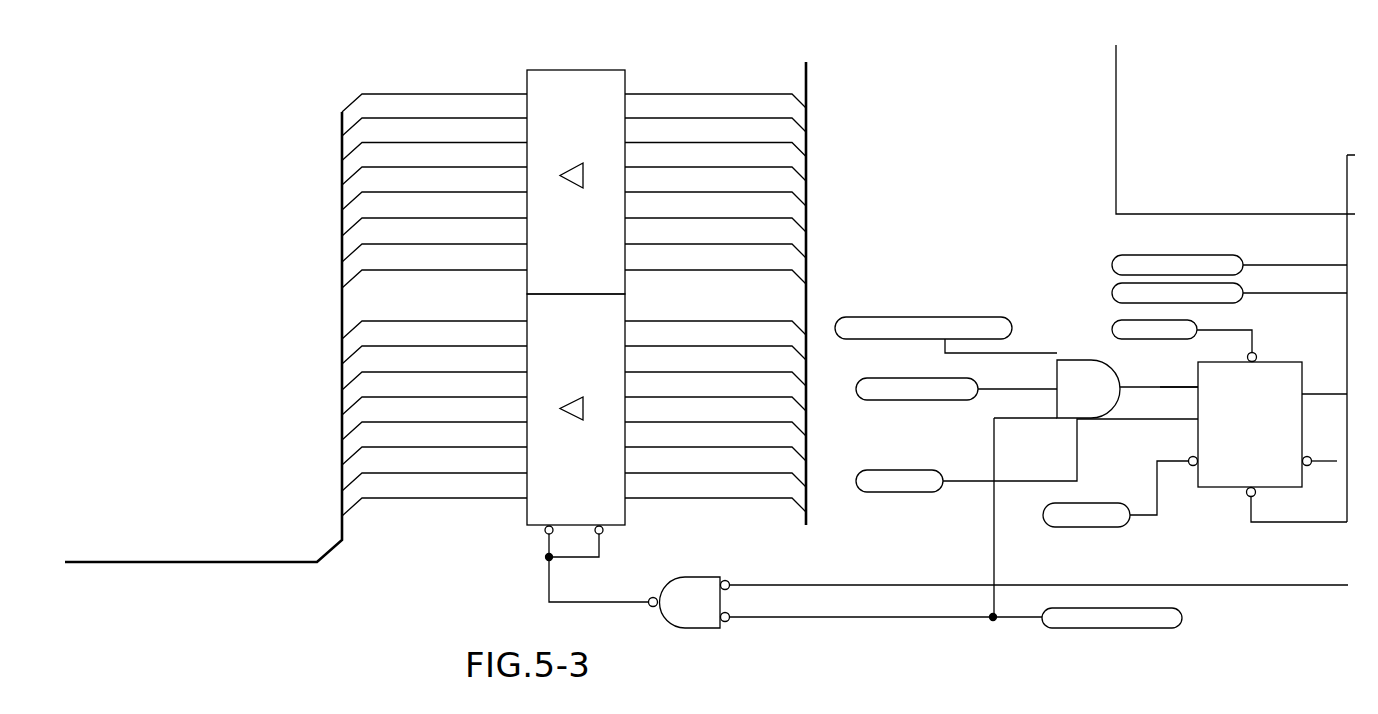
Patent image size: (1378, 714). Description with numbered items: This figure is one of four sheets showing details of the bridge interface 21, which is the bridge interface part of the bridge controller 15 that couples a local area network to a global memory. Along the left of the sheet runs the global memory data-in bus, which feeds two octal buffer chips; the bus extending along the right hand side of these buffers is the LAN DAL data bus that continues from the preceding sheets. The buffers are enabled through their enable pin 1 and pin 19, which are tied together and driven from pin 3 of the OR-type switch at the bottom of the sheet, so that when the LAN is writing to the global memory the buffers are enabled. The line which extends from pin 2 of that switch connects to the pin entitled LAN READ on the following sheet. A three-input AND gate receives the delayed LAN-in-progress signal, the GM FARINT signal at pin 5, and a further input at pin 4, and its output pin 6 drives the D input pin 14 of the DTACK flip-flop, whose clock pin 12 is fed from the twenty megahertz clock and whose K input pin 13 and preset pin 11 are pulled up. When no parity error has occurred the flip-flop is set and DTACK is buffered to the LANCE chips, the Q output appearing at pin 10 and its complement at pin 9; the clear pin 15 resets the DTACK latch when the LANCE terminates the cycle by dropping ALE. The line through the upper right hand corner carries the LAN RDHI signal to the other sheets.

The bridge interface 21 is at (937, 34).
The pin 1 is at (540, 541).
The LS244 enable pin 19 is at (575, 543).
The F32 gate input pin 3 is at (603, 582).
The pin 2 of the F32 switch K5J9 2 is at (1035, 575).
The LS11 gate input pin 5 is at (1017, 374).
The LS11 gate input pin 4 is at (1025, 506).
The LS11 gate output pin 6 is at (1159, 377).
The F109 D input pin 14 is at (1179, 377).
The F109 clock input pin 12 is at (1070, 438).
The F109 K input pin 13 is at (1164, 475).
The pin 11 is at (1227, 346).
The F109 Q output pin 10 is at (1324, 382).
The pin 9 is at (1320, 453).
The bridge controller 15 is at (1297, 505).